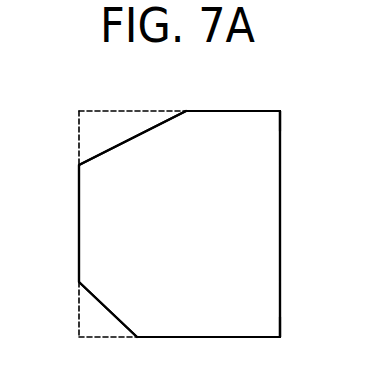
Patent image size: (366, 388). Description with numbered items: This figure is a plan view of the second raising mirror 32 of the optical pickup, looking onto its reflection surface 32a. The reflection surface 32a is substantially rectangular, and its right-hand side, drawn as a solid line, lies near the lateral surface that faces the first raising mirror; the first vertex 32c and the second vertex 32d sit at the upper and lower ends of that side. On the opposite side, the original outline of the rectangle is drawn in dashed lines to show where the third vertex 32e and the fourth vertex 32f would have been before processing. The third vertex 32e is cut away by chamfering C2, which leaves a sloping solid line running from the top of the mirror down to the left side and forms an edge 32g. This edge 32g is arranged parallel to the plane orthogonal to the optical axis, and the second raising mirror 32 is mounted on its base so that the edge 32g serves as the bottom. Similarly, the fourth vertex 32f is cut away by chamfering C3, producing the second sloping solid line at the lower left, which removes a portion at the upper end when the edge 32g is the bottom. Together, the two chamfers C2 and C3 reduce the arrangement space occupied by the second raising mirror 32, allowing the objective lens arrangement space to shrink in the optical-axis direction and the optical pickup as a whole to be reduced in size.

The second raising mirror 32 is at (223, 122).
The reflection surface 32a is at (235, 212).
The first vertex 32c is at (282, 110).
The second vertex 32d is at (282, 338).
The third vertex 32e is at (78, 110).
The fourth vertex 32f is at (79, 338).
The edge 32g is at (82, 162).
The chamfering C2 is at (82, 134).
The chamfering C3 is at (82, 311).